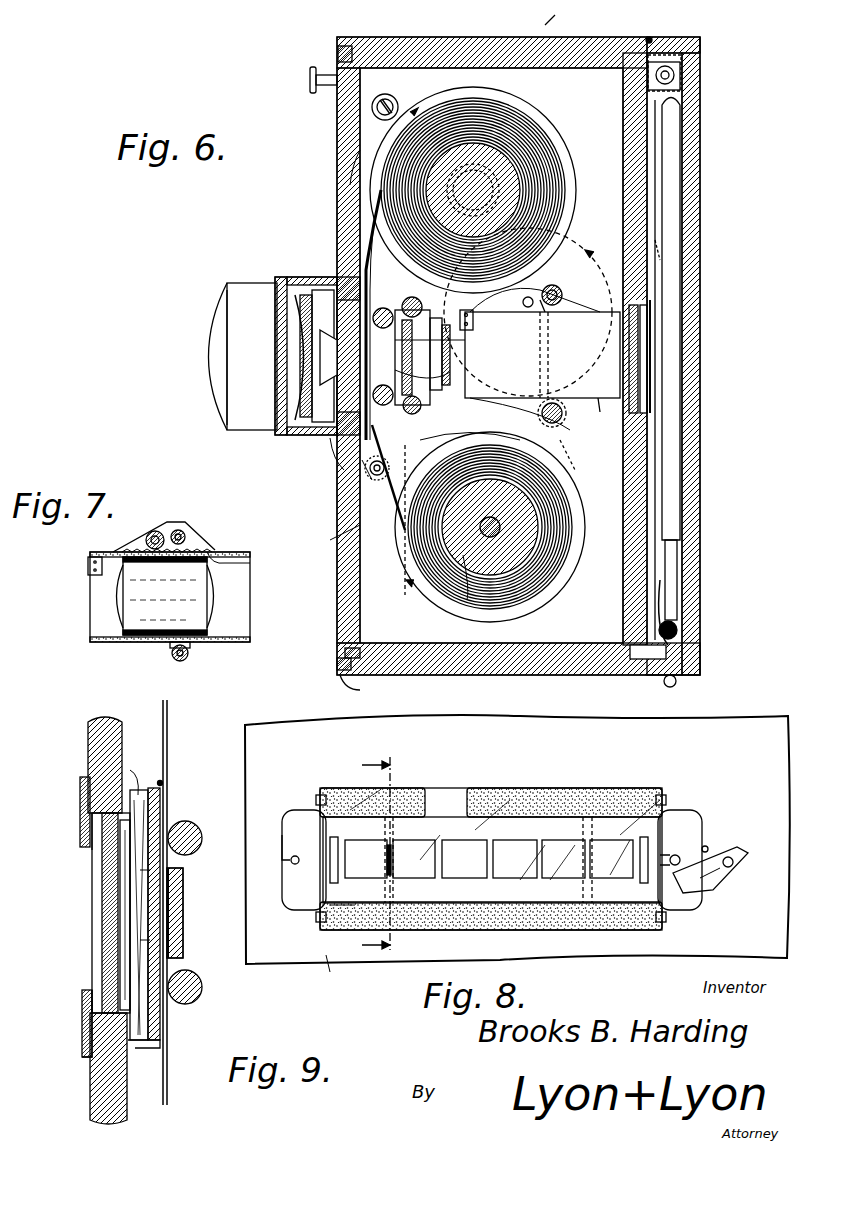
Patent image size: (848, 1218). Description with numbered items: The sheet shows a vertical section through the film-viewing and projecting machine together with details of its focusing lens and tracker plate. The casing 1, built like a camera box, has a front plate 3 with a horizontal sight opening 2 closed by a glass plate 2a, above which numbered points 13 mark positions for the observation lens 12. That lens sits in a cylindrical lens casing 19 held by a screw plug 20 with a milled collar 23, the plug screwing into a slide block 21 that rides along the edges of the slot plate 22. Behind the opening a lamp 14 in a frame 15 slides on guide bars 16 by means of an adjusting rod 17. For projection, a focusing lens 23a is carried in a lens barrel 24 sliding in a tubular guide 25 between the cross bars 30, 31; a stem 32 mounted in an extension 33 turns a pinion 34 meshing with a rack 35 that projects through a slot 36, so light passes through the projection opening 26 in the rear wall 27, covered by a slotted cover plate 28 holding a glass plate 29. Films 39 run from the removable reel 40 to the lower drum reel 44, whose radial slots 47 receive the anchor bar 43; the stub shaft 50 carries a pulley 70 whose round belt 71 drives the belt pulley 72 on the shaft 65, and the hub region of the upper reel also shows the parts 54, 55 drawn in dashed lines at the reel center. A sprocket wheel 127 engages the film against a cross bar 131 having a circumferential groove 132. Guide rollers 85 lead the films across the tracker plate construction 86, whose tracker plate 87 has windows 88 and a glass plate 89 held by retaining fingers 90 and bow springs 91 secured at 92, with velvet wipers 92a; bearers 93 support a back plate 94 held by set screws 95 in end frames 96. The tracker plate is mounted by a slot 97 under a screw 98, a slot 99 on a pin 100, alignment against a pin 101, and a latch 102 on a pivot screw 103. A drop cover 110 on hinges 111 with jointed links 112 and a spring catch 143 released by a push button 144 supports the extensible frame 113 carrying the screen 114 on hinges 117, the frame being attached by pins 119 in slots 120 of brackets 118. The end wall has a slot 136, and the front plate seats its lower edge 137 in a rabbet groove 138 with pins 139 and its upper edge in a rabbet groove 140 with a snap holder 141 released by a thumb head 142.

In FIG. 6, the casing 1 is at (590, 40).
In FIG. 6, the sight opening 2 is at (350, 170).
In FIG. 9, the sight opening 2 is at (78, 860).
In FIG. 9, the glass plate 2a is at (90, 985).
In FIG. 6, the front plate 3 is at (337, 108).
In FIG. 9, the front plate 3 is at (90, 727).
In FIG. 8, the front plate 3 is at (328, 974).
In FIG. 6, the observation lens 12 is at (210, 315).
In FIG. 6, the numbered points 13 is at (362, 235).
In FIG. 6, the lamp 14 is at (538, 360).
In FIG. 6, the frame 15 is at (440, 392).
In FIG. 6, the guide bars 16 is at (420, 308).
In FIG. 6, the adjusting rod 17 is at (420, 406).
In FIG. 6, the lens casing 19 is at (240, 295).
In FIG. 6, the screw plug 20 is at (298, 280).
In FIG. 6, the slide block 21 is at (340, 280).
In FIG. 6, the slot plate 22 is at (342, 440).
In FIG. 9, the slot plate 22 is at (80, 792).
In FIG. 6, the milled collar 23 is at (282, 438).
In FIG. 7, the focusing lens 23a is at (132, 582).
In FIG. 7, the lens barrel 24 is at (150, 612).
In FIG. 6, the tubular guide 25 is at (597, 411).
In FIG. 7, the tubular guide 25 is at (232, 552).
In FIG. 6, the projection opening 26 is at (655, 340).
In FIG. 6, the rear wall 27 is at (640, 165).
In FIG. 6, the slotted cover plate 28 is at (650, 292).
In FIG. 6, the glass plate 29 is at (640, 350).
In FIG. 6, the cross bar 30 is at (542, 290).
In FIG. 7, the cross bar 30 is at (190, 528).
In FIG. 6, the cross bar 31 is at (570, 430).
In FIG. 7, the cross bar 31 is at (190, 655).
In FIG. 6, the stem 32 is at (522, 301).
In FIG. 7, the stem 32 is at (153, 532).
In FIG. 6, the extension 33 is at (563, 295).
In FIG. 7, the extension 33 is at (179, 530).
In FIG. 6, the pinion 34 is at (548, 315).
In FIG. 6, the rack 35 is at (463, 345).
In FIG. 7, the rack 35 is at (200, 550).
In FIG. 7, the slot 36 is at (250, 562).
In FIG. 6, the photographic films 39 is at (510, 170).
In FIG. 6, the removable reel 40 is at (530, 100).
In FIG. 6, the anchor bar 43 is at (472, 591).
In FIG. 6, the drum reel 44 is at (580, 565).
In FIG. 6, the radial slots 47 is at (380, 535).
In FIG. 6, the stub shaft 50 is at (495, 192).
In FIG. 6, the spindle gear 54 is at (500, 185).
In FIG. 6, the drive gear 55 is at (590, 255).
In FIG. 6, the shaft 65 is at (408, 298).
In FIG. 6, the pulley 70 is at (500, 115).
In FIG. 6, the round belt 71 is at (575, 470).
In FIG. 6, the belt pulley 72 is at (530, 605).
In FIG. 6, the guide rollers 85 is at (395, 400).
In FIG. 9, the guide rollers 85 is at (187, 828).
In FIG. 6, the tracker plate construction 86 is at (541, 412).
In FIG. 9, the tracker plate construction 86 is at (140, 1052).
In FIG. 9, the tracker plate 87 is at (130, 772).
In FIG. 8, the tracker plate 87 is at (298, 905).
In FIG. 9, the windows 88 is at (115, 885).
In FIG. 8, the windows 88 is at (462, 840).
In FIG. 9, the glass plate 89 is at (125, 945).
In FIG. 8, the glass plate 89 is at (360, 890).
In FIG. 9, the retaining fingers 90 is at (152, 790).
In FIG. 8, the retaining fingers 90 is at (318, 800).
In FIG. 9, the bow springs 91 is at (142, 790).
In FIG. 8, the bow springs 91 is at (400, 890).
In FIG. 9, the securing points 92 is at (175, 925).
In FIG. 8, the securing points 92 is at (400, 858).
In FIG. 9, the wipers 92a is at (168, 790).
In FIG. 8, the wipers 92a is at (520, 788).
In FIG. 9, the bearers 93 is at (170, 866).
In FIG. 8, the bearers 93 is at (330, 845).
In FIG. 6, the back plate 94 is at (475, 320).
In FIG. 9, the back plate 94 is at (184, 912).
In FIG. 6, the set screws 95 is at (452, 345).
In FIG. 6, the end frames 96 is at (450, 375).
In FIG. 8, the slot 97 is at (290, 863).
In FIG. 9, the screw 98 is at (184, 888).
In FIG. 8, the screw 98 is at (295, 866).
In FIG. 8, the slot 99 is at (680, 858).
In FIG. 8, the pin 100 is at (708, 847).
In FIG. 8, the pin 101 is at (730, 858).
In FIG. 8, the latch 102 is at (705, 878).
In FIG. 8, the pivot screw 103 is at (745, 872).
In FIG. 6, the drop cover 110 is at (700, 76).
In FIG. 6, the hinges 111 is at (652, 37).
In FIG. 6, the jointed links 112 is at (700, 260).
In FIG. 6, the extensible frame 113 is at (672, 452).
In FIG. 6, the screen 114 is at (660, 502).
In FIG. 6, the hinges 117 is at (672, 622).
In FIG. 6, the brackets 118 is at (672, 90).
In FIG. 6, the pins 119 is at (675, 68).
In FIG. 6, the slots 120 is at (703, 35).
In FIG. 6, the sprocket wheel 127 is at (372, 476).
In FIG. 6, the cross bar 131 is at (345, 530).
In FIG. 6, the circumferential groove 132 is at (495, 460).
In FIG. 6, the slot 136 is at (350, 480).
In FIG. 6, the lower edge 137 is at (362, 645).
In FIG. 6, the rabbet groove 138 is at (367, 686).
In FIG. 6, the pins 139 is at (345, 655).
In FIG. 6, the rabbet groove 140 is at (378, 37).
In FIG. 6, the snap holder 141 is at (337, 48).
In FIG. 6, the thumb head 142 is at (310, 82).
In FIG. 6, the spring catch 143 is at (690, 650).
In FIG. 6, the push button 144 is at (668, 687).